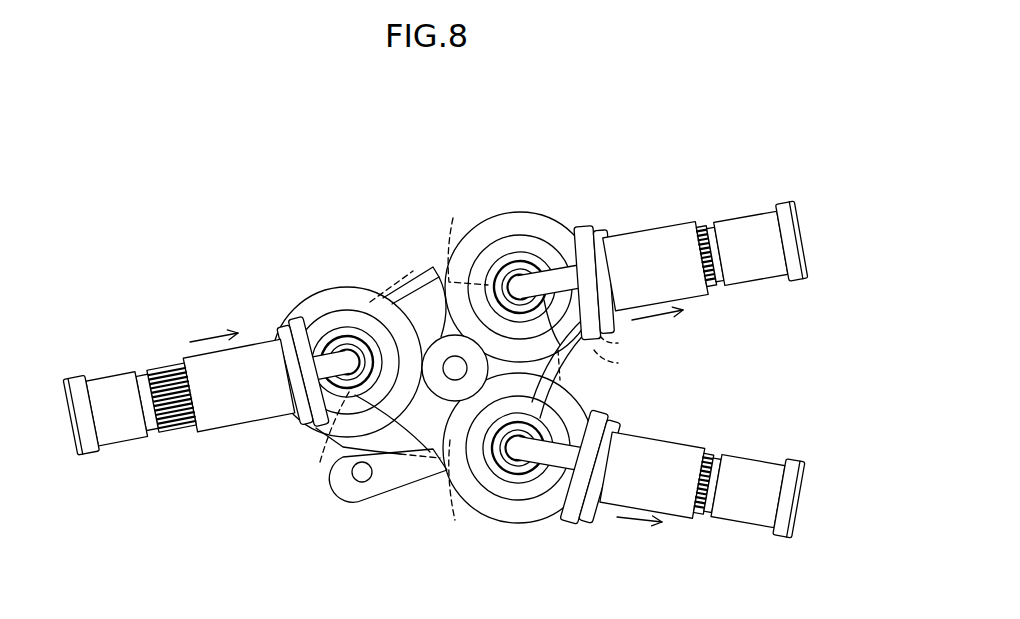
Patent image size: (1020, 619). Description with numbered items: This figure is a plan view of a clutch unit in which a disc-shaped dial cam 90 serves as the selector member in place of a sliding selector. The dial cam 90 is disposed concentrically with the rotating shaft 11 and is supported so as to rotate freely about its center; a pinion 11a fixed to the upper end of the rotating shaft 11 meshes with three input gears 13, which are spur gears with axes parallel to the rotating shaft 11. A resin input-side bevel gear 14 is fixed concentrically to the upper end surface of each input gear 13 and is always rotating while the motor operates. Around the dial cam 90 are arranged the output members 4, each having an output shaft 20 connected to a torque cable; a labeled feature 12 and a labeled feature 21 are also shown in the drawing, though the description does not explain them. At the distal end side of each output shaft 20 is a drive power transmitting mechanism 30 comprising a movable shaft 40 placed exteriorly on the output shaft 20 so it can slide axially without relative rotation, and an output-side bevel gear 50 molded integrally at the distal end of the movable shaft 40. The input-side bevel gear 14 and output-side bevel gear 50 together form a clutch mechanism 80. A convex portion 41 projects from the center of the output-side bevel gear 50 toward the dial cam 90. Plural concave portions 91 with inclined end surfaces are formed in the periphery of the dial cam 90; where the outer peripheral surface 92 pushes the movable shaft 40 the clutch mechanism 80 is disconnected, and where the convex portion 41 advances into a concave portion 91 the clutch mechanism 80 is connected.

The output member 4 is at (437, 343).
The rotating shaft 11 is at (454, 394).
The pinion 11a is at (415, 277).
The mounting hole 12 is at (370, 500).
The input gear 13 is at (540, 212).
The input-side bevel gear 14 is at (483, 265).
The output shaft 20 is at (752, 230).
The spline portion 21 is at (705, 226).
The drive power transmitting mechanism 30 is at (435, 363).
The movable shaft 40 is at (662, 242).
The convex portion 41 is at (518, 283).
The output-side bevel gear 50 is at (577, 247).
The clutch mechanism 80 is at (573, 522).
The dial cam 90 is at (606, 365).
The concave portion 91 is at (394, 370).
The outer peripheral surface 92 is at (627, 344).